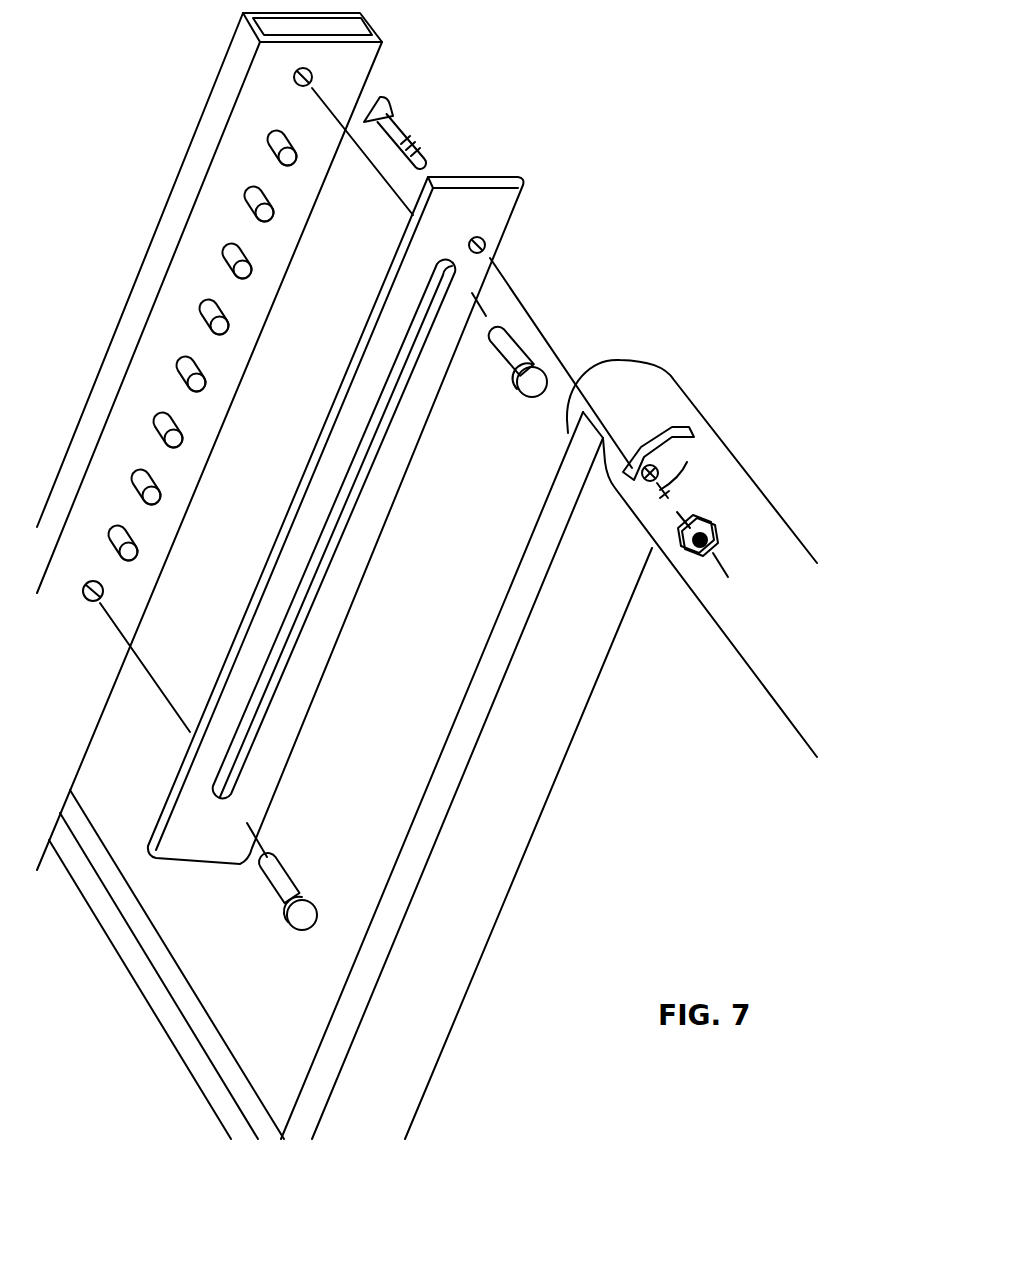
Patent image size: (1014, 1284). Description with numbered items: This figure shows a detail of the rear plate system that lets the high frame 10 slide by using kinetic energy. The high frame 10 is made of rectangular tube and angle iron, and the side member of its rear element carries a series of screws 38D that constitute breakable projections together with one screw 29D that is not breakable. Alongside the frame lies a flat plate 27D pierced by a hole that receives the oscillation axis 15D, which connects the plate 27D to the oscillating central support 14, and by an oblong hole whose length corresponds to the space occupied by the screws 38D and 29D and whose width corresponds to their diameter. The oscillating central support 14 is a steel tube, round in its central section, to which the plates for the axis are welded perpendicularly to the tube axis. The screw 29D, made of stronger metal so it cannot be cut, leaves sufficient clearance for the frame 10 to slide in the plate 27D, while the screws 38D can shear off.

The high frame 10 is at (213, 133).
The oscillating central support 14 is at (632, 393).
The oscillation axis 15D is at (398, 137).
The plate 27D is at (477, 207).
The screw 29D is at (508, 352).
The screws 38D is at (258, 845).